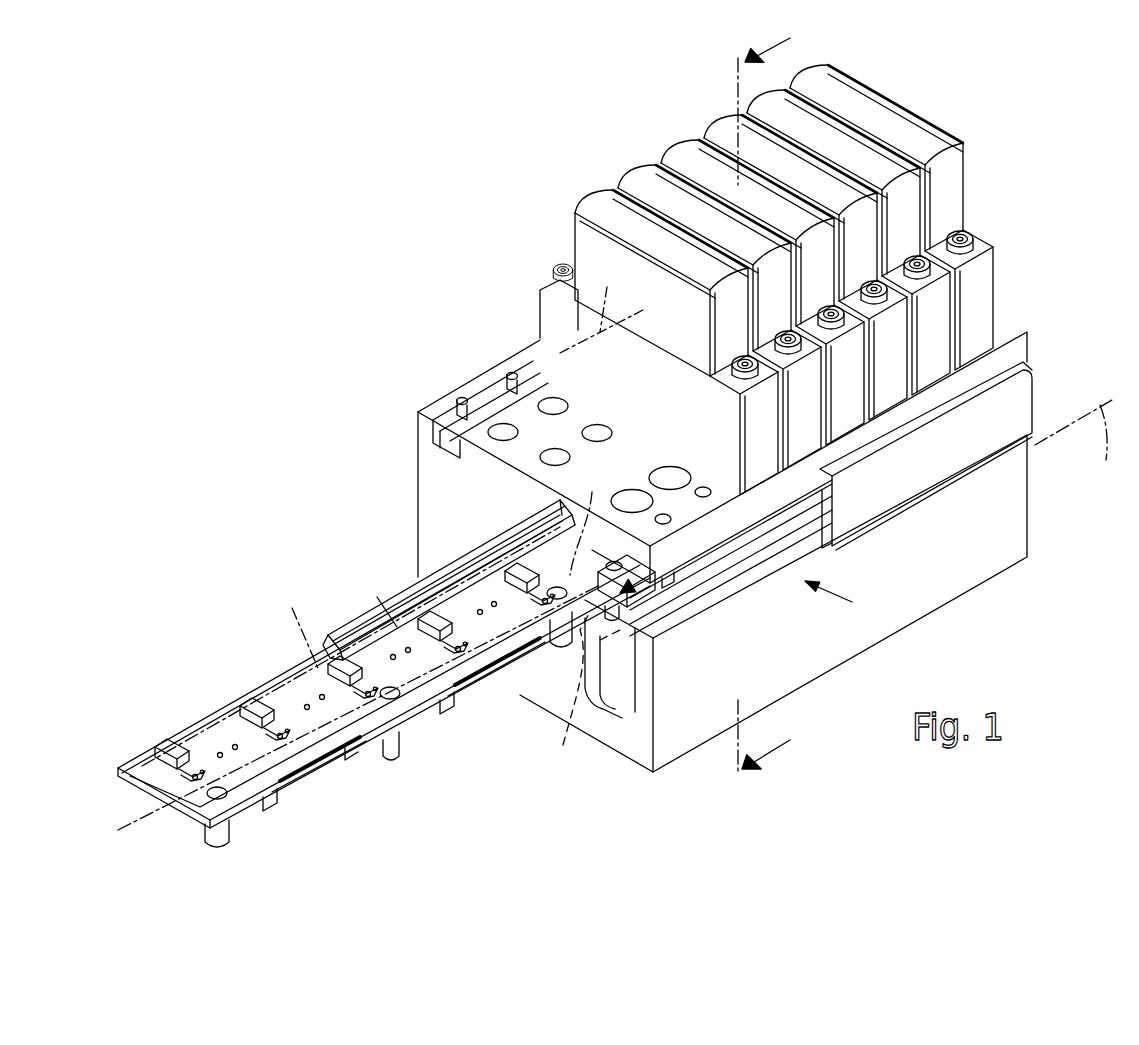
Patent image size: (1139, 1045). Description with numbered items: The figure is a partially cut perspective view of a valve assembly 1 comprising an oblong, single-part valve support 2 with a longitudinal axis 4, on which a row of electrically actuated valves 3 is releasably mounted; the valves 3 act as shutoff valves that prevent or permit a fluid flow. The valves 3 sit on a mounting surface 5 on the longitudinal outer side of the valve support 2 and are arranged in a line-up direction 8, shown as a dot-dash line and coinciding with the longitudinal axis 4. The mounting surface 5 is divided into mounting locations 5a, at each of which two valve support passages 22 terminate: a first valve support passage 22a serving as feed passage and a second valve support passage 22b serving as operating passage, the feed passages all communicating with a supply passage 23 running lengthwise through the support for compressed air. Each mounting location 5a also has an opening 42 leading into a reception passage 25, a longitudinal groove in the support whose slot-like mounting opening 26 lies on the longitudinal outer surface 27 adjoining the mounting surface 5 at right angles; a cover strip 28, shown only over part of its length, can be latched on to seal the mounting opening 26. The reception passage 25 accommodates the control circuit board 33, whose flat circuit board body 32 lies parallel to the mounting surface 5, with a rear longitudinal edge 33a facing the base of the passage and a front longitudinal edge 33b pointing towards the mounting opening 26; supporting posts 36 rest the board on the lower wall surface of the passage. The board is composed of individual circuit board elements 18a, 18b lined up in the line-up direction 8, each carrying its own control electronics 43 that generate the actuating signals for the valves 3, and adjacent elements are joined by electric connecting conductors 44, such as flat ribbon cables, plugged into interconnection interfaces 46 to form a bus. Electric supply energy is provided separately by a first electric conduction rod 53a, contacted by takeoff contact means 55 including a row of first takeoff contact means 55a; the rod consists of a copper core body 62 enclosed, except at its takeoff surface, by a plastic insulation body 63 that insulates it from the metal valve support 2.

The valve assembly 1 is at (1026, 148).
The valve support 2 is at (968, 568).
The electrically actuated valves 3 is at (605, 207).
The longitudinal axis 4 is at (1078, 446).
The mounting surface 5 is at (531, 435).
The mounting locations 5a is at (530, 400).
The line-up direction 8 is at (601, 305).
The circuit board element 18a is at (627, 592).
The circuit board element 18b is at (364, 750).
The valve support passages 22 is at (462, 440).
The first valve support passage 22a is at (557, 458).
The second valve support passage 22b is at (503, 433).
The supply passage 23 is at (612, 690).
The reception passage 25 is at (777, 545).
The mounting opening 26 is at (793, 552).
The longitudinal outer surface 27 is at (1007, 518).
The cover strip 28 is at (1017, 403).
The circuit board body 32 is at (425, 710).
The circuit board 33 is at (447, 679).
The rear longitudinal edge 33a is at (160, 750).
The front longitudinal edge 33b is at (247, 805).
The supporting posts 36 is at (210, 840).
The opening 42 is at (672, 476).
The control electronics 43 is at (363, 645).
The electric connecting conductors 44 is at (582, 698).
The interconnection interfaces 46 is at (327, 783).
The first electric conduction rod 53a is at (370, 587).
The takeoff contact means 55 is at (262, 700).
The first takeoff contact means 55a is at (180, 760).
The core body 62 is at (350, 627).
The insulation body 63 is at (402, 593).